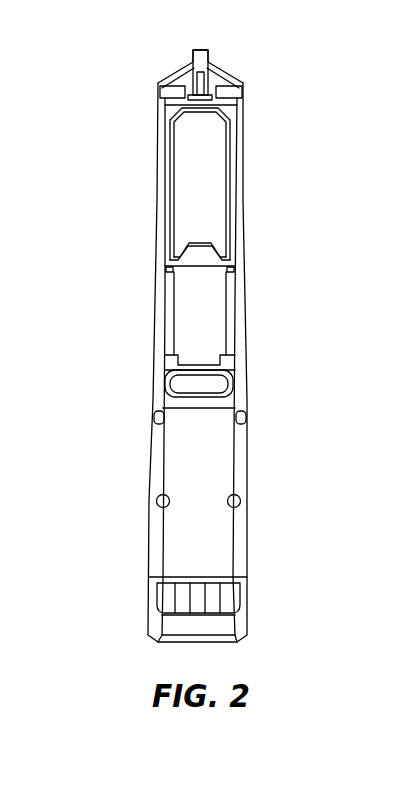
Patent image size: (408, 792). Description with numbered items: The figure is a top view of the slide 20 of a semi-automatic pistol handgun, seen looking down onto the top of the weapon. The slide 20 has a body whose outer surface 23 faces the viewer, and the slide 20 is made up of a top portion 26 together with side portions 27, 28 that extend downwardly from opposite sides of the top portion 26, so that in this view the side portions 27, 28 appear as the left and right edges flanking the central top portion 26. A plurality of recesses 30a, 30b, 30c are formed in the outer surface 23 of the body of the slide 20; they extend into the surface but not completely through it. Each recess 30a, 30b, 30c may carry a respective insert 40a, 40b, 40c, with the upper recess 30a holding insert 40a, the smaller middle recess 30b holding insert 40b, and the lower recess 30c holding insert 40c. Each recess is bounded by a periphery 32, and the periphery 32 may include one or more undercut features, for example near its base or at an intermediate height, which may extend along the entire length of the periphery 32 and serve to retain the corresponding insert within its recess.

The slide 20 is at (124, 613).
The outer surface 23 is at (182, 82).
The top portion 26 is at (223, 72).
The side portion 27 is at (155, 273).
The side portion 28 is at (240, 252).
The recess 30a is at (240, 170).
The recess 30b is at (247, 373).
The recess 30c is at (233, 580).
The periphery 32 is at (228, 186).
The insert 40a is at (210, 143).
The insert 40b is at (207, 388).
The insert 40c is at (213, 482).